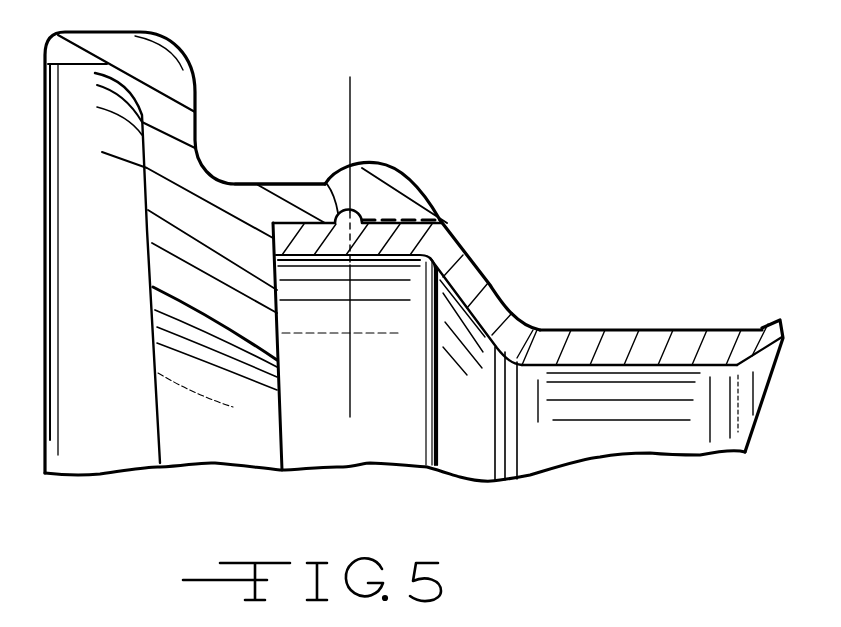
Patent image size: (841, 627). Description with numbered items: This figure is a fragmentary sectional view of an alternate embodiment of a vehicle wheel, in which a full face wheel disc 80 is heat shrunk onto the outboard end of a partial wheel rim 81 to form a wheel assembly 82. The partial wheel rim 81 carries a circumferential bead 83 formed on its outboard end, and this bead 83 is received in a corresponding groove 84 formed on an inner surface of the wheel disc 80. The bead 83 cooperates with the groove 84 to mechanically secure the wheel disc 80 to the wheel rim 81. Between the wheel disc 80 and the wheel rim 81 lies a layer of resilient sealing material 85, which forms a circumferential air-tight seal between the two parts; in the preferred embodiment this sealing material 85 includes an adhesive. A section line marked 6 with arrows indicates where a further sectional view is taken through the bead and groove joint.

The full face wheel disc 80 is at (168, 118).
The partial wheel rim 81 is at (580, 350).
The wheel assembly 82 is at (521, 240).
The circumferential bead 83 is at (358, 219).
The groove 84 is at (327, 184).
The layer of resilient sealing material 85 is at (412, 222).
The section line 6- 6 is at (367, 87).